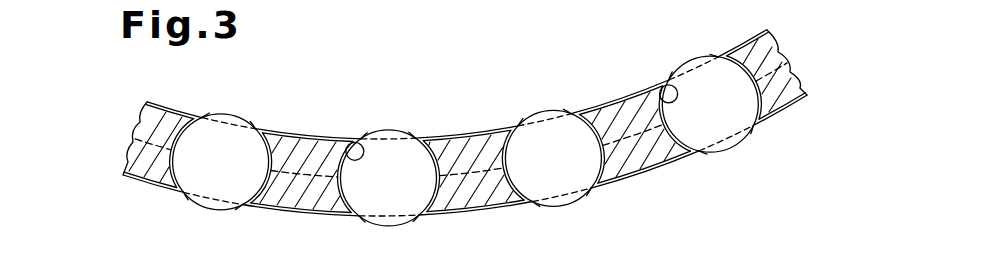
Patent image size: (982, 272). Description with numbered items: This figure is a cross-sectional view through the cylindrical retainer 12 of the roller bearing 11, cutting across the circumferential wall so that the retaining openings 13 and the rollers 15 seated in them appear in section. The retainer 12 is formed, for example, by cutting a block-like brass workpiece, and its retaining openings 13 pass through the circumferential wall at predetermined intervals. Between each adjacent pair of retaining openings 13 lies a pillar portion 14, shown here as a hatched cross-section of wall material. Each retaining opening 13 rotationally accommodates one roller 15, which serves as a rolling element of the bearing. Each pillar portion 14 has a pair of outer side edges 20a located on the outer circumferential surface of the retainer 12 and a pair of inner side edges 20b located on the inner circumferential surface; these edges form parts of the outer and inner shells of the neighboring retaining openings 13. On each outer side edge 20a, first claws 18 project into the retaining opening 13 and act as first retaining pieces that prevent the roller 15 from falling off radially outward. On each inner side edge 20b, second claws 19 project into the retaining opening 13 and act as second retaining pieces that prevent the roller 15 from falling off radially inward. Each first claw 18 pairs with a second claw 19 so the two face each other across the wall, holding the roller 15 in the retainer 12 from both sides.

The roller bearing 11 is at (272, 212).
The retainer 12 is at (483, 209).
The retaining opening 13 is at (352, 142).
The pillar portion 14 is at (288, 134).
The roller 15 is at (386, 131).
The first claw 18 is at (348, 216).
The second claw 19 is at (424, 138).
The outer side edge 20a is at (588, 196).
The inner side edge 20b is at (571, 113).